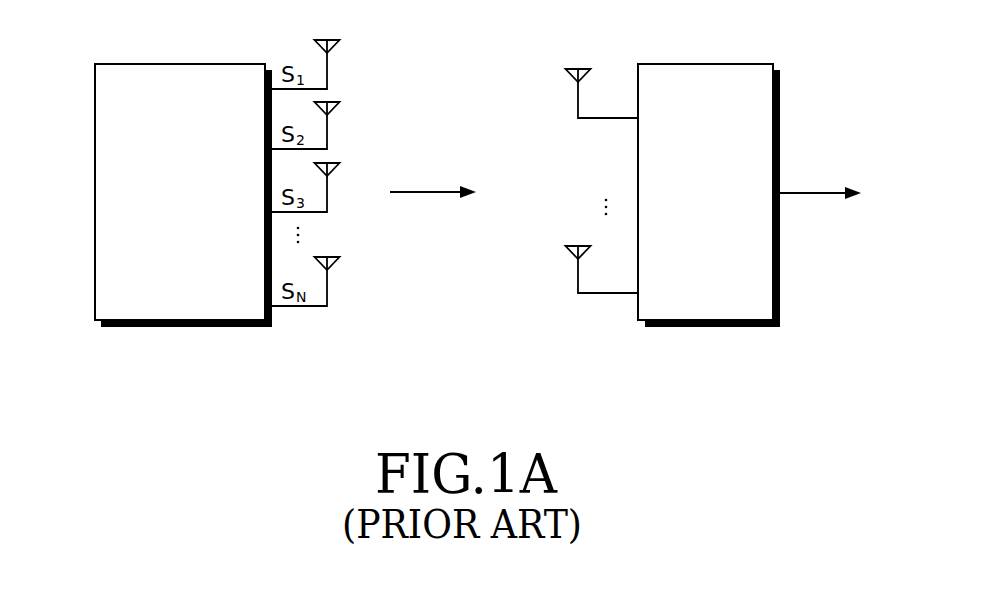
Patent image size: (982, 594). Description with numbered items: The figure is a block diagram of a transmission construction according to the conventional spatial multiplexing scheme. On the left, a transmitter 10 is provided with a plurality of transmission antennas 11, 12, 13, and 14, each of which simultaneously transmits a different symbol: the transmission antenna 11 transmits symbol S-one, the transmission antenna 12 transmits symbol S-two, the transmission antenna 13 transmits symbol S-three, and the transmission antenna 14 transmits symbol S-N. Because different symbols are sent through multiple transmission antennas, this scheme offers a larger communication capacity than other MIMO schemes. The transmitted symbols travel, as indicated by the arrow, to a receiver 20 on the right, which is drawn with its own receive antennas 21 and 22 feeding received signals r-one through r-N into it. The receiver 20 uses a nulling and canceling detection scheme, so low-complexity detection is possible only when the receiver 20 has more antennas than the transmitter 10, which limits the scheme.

The transmitter 10 is at (181, 64).
The transmission antenna 11 is at (340, 42).
The transmission antenna 12 is at (340, 104).
The transmission antenna 13 is at (340, 165).
The transmission antenna 14 is at (340, 259).
The receiver 20 is at (704, 64).
The receive antenna 21 is at (565, 72).
The receive antenna 22 is at (565, 249).